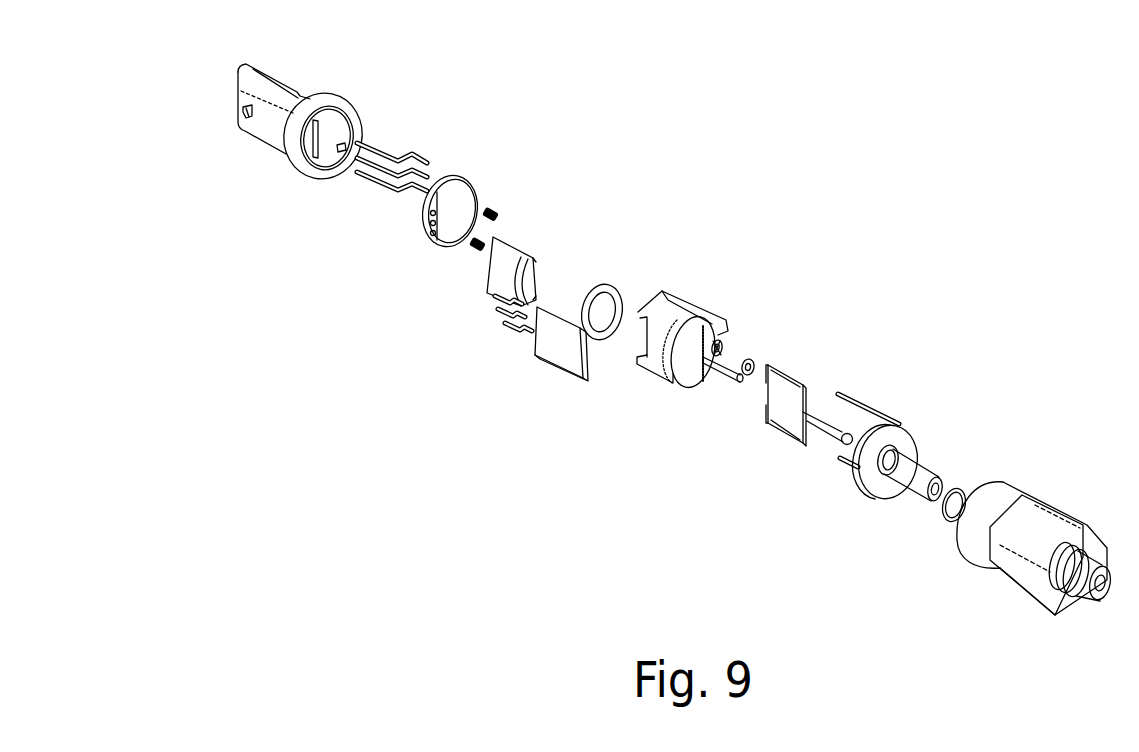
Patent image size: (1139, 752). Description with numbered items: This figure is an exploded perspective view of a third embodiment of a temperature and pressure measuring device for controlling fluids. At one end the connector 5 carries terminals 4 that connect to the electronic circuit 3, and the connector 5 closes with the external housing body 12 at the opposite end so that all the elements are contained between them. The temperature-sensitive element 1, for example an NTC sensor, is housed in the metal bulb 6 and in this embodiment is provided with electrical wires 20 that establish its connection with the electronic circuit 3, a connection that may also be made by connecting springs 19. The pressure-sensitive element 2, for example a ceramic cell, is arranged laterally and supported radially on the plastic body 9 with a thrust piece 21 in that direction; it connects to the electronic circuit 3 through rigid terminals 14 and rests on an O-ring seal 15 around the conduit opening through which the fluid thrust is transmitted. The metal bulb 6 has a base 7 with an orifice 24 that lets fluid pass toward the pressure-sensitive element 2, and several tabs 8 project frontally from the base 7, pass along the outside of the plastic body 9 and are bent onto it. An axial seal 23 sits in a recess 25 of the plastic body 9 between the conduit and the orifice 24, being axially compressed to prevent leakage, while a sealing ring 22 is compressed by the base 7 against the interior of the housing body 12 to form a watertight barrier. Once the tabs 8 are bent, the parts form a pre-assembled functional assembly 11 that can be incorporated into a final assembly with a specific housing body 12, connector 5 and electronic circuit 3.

The temperature-sensitive element 1 is at (843, 433).
The pressure-sensitive element 2 is at (558, 350).
The electronic circuit 3 is at (453, 192).
The terminals 4 is at (387, 184).
The connector 5 is at (265, 126).
The metal bulb 6 is at (922, 480).
The base 7 is at (877, 486).
The tabs 8 is at (878, 412).
The plastic body 9 is at (694, 305).
The functional assembly 11 is at (657, 415).
The housing body 12 is at (1043, 527).
The rigid terminals 14 is at (512, 330).
The O-ring seal 15 is at (602, 298).
The connecting springs 19 is at (474, 240).
The electrical wires 20 is at (773, 427).
The thrust piece 21 is at (500, 268).
The sealing ring 22 is at (945, 514).
The axial seal 23 is at (752, 360).
The orifice 24 is at (900, 456).
The recess 25 is at (723, 336).